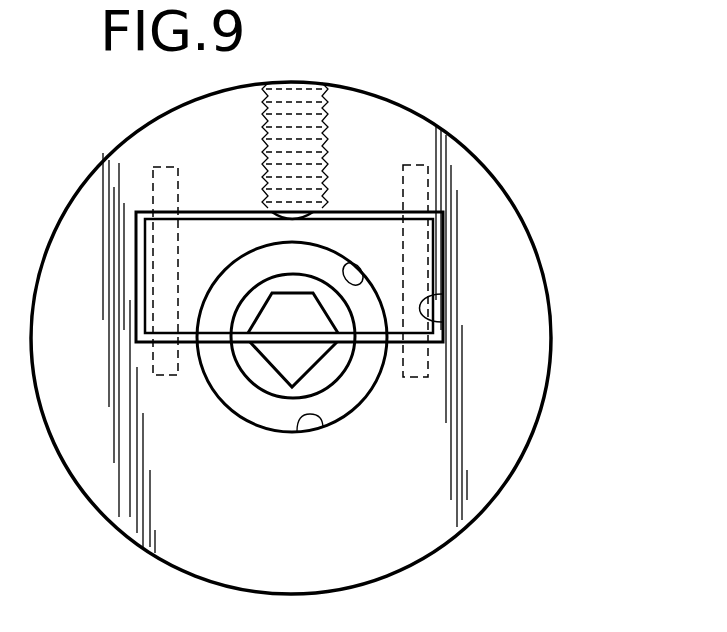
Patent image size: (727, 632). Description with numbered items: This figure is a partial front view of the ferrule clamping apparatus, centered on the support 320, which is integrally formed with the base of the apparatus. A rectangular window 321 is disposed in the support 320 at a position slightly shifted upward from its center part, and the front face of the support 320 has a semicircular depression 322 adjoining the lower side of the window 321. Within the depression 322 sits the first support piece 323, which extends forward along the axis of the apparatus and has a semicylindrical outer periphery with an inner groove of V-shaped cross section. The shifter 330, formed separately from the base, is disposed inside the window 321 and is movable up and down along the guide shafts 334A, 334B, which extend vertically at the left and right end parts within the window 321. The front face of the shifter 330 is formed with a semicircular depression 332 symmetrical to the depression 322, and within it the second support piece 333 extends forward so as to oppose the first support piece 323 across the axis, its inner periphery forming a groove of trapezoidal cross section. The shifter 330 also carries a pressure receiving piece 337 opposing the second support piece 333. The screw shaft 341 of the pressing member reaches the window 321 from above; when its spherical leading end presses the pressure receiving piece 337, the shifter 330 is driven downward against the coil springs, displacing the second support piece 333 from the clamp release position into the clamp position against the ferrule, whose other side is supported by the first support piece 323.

The support 320 is at (490, 448).
The rectangular window 321 is at (432, 320).
The semicircular depression 322 is at (323, 428).
The first support piece 323 is at (262, 388).
The shifter 330 is at (374, 203).
The semicircular depression 332 is at (362, 281).
The second support piece 333 is at (247, 288).
The guide shaft 334A is at (163, 165).
The guide shaft 334B is at (428, 165).
The pressure receiving piece 337 is at (298, 236).
The screw shaft 341 is at (325, 102).